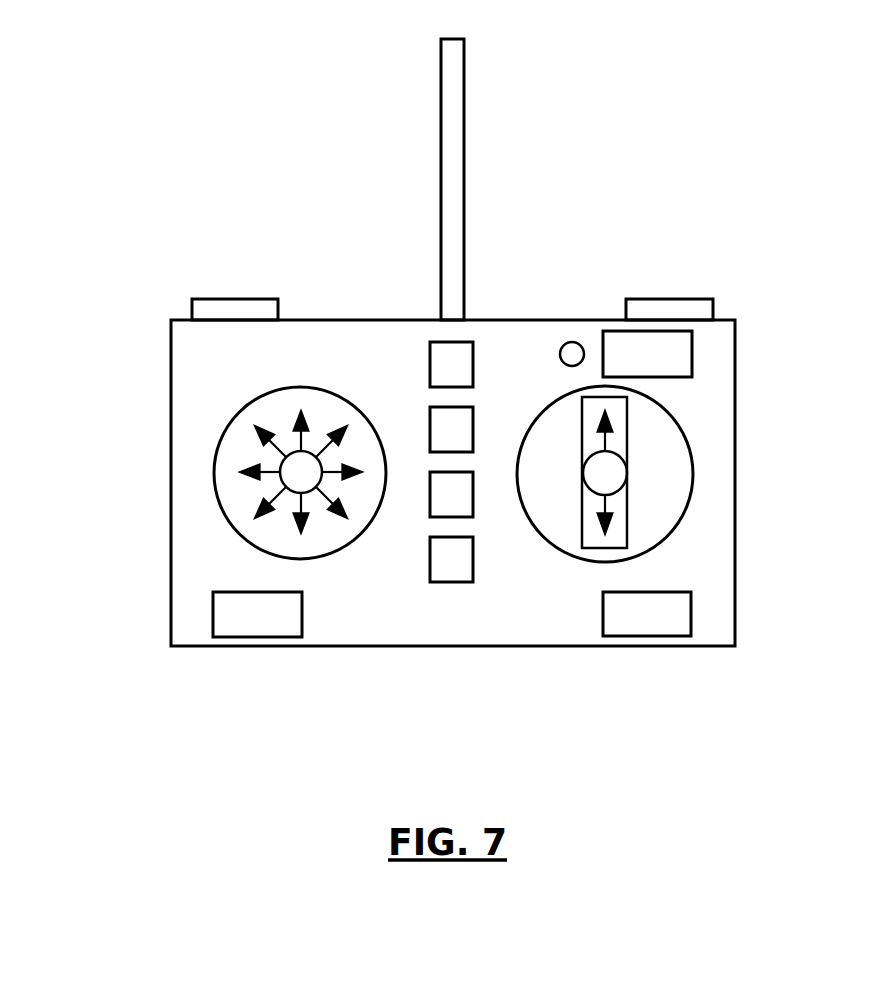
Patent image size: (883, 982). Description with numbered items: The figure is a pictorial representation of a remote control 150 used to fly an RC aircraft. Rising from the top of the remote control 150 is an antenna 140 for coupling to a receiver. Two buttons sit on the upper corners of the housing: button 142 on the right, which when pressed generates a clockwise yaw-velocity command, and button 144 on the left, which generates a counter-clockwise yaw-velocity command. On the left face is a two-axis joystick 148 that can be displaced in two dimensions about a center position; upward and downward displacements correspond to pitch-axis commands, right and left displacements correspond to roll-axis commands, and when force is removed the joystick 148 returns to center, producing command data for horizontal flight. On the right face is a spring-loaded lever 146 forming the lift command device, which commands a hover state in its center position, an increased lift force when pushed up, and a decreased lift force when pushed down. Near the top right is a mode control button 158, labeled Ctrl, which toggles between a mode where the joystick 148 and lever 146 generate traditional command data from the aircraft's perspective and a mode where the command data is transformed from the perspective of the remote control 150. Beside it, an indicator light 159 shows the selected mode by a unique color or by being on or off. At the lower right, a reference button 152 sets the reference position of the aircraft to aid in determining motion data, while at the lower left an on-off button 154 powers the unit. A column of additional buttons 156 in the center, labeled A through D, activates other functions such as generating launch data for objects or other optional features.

The antenna 140 is at (487, 185).
The button 142 is at (671, 274).
The button 144 is at (235, 274).
The lever 146 is at (692, 403).
The two-axis joystick 148 is at (213, 416).
The remote control 150 is at (258, 360).
The reference button 152 is at (692, 578).
The on-off button 154 is at (211, 578).
The additional buttons 156 is at (454, 606).
The mode control button 158 is at (702, 348).
The indicator light 159 is at (572, 339).